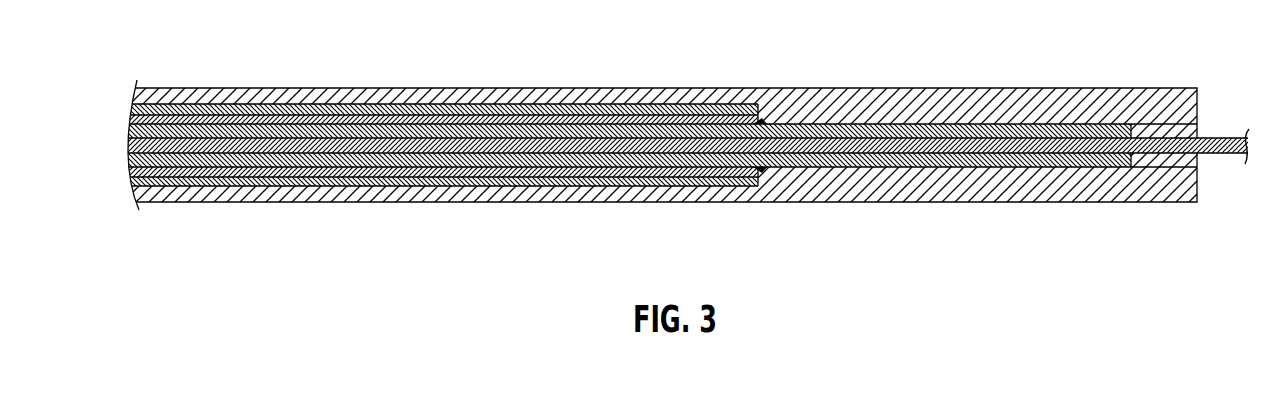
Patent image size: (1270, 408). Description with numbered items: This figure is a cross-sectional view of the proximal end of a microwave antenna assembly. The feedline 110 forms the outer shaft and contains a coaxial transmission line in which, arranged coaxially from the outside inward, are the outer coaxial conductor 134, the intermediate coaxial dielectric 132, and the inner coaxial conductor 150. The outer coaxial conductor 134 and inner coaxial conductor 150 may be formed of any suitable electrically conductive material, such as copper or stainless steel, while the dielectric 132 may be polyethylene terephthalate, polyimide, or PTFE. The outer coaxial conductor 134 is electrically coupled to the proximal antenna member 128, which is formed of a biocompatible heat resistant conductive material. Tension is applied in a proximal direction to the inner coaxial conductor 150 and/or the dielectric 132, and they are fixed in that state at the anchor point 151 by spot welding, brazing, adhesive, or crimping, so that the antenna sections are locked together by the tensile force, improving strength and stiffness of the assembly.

The feedline 110 is at (613, 92).
The proximal antenna member 128 is at (460, 113).
The intermediate coaxial dielectric 132 is at (373, 130).
The outer coaxial conductor 134 is at (253, 121).
The inner coaxial conductor 150 is at (1155, 148).
The anchor point 151 is at (760, 120).